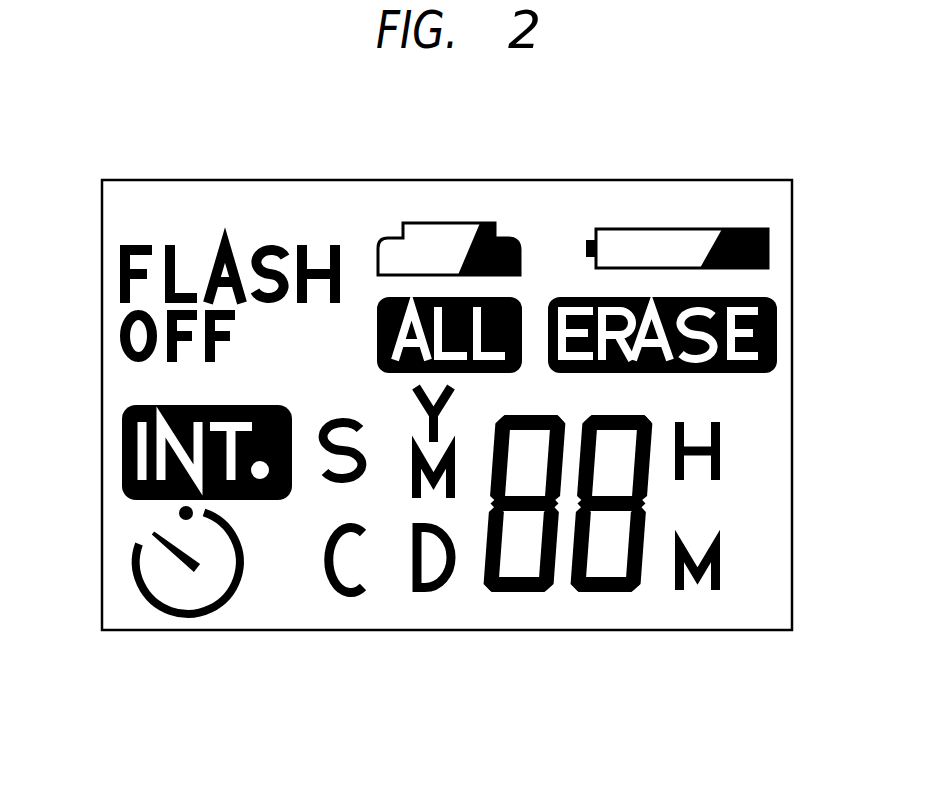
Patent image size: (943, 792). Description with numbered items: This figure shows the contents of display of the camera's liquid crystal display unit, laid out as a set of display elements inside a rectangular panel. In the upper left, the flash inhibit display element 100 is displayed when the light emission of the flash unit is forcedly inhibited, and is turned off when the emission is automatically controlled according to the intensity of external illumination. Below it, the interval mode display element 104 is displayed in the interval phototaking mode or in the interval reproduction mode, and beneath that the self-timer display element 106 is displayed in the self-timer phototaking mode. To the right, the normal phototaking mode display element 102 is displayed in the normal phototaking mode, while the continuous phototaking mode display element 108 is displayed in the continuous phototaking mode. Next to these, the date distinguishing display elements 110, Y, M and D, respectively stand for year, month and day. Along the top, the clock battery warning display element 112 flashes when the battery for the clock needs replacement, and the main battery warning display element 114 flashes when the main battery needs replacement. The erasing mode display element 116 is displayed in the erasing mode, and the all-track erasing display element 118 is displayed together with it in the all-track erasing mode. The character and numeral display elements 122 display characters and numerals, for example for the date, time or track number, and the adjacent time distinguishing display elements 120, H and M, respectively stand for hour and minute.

The flash inhibit display element 100 is at (102, 283).
The normal phototaking mode display element 102 is at (315, 409).
The interval mode display element 104 is at (117, 461).
The self-timer display element 106 is at (129, 569).
The continuous phototaking mode display element 108 is at (346, 606).
The date distinguishing display elements 110 is at (433, 602).
The clock battery warning display element 112 is at (442, 210).
The main battery warning display element 114 is at (640, 212).
The erasing mode display element 116 is at (783, 334).
The all-track erasing display element 118 is at (528, 384).
The time distinguishing display elements 120 is at (734, 461).
The character and numeral display elements 122 is at (589, 605).